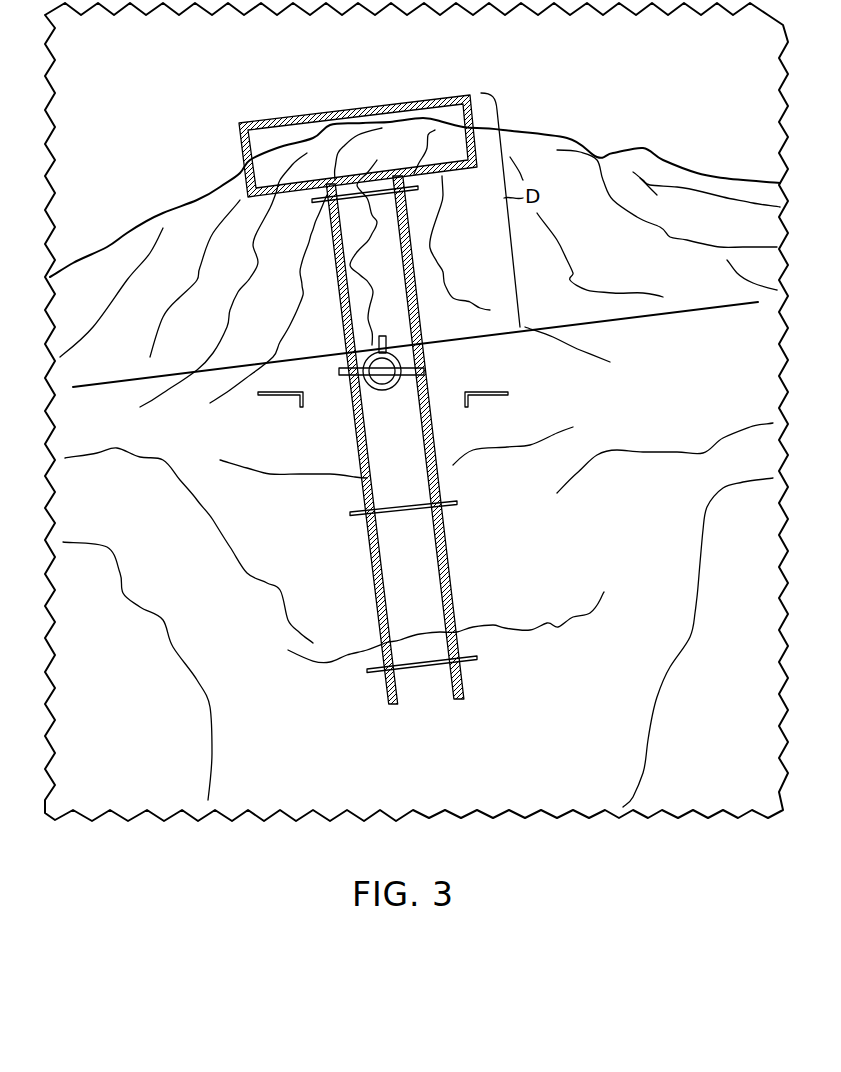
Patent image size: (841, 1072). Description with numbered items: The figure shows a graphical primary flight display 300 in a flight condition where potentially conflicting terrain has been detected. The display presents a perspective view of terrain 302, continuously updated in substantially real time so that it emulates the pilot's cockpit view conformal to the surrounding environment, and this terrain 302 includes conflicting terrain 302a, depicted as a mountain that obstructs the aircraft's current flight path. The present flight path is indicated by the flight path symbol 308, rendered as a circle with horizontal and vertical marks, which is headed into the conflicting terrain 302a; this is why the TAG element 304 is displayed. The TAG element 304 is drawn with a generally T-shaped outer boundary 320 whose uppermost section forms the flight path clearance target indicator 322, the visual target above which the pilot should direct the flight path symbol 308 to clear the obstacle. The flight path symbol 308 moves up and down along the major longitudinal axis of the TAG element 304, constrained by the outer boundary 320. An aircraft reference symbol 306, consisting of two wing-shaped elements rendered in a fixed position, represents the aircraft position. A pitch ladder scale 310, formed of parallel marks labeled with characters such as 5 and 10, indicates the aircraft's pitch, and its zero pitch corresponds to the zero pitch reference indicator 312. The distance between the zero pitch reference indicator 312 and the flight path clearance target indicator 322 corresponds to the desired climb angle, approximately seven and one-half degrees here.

The primary flight display 300 is at (416, 412).
The terrain 302 is at (183, 481).
The conflicting terrain 302a is at (570, 140).
The TAG element 304 is at (449, 563).
The aircraft reference symbol 306 is at (275, 397).
The flight path symbol 308 is at (388, 392).
The pitch ladder scale 310 is at (436, 709).
The zero pitch reference indicator 312 is at (122, 378).
The outer boundary 320 is at (341, 384).
The flight path clearance target indicator 322 is at (331, 112).
The section line 5 is at (385, 352).
The section line 10 is at (426, 663).